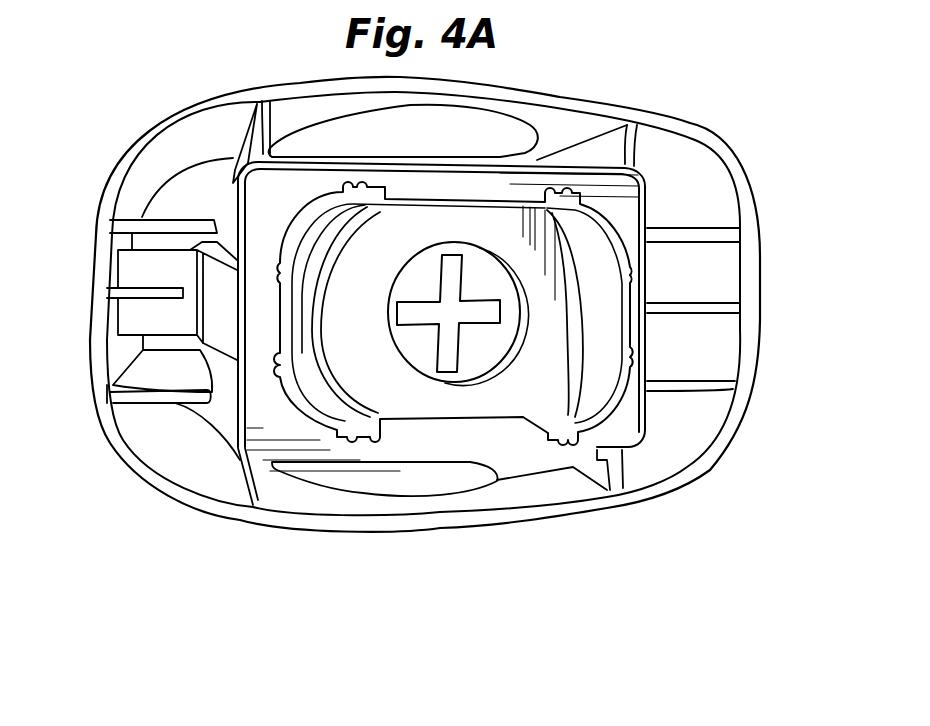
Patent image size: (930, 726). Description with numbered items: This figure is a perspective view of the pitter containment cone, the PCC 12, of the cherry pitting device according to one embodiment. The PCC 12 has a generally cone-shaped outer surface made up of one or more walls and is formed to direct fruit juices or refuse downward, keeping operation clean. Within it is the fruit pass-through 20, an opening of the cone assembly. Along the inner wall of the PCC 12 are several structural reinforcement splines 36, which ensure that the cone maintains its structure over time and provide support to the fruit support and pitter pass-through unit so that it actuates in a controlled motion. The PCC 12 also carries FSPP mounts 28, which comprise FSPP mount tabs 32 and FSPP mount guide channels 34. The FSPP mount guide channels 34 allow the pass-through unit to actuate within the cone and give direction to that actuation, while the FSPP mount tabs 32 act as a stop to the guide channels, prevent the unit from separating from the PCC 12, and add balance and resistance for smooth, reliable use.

The pitter containment cone 12 is at (690, 480).
The fruit pass-through 20 is at (493, 116).
The FSPP mount 28 is at (127, 267).
The FSPP mount tab 32 is at (143, 313).
The FSPP mount guide channel 34 is at (130, 365).
The structural reinforcement spline 36 is at (128, 218).